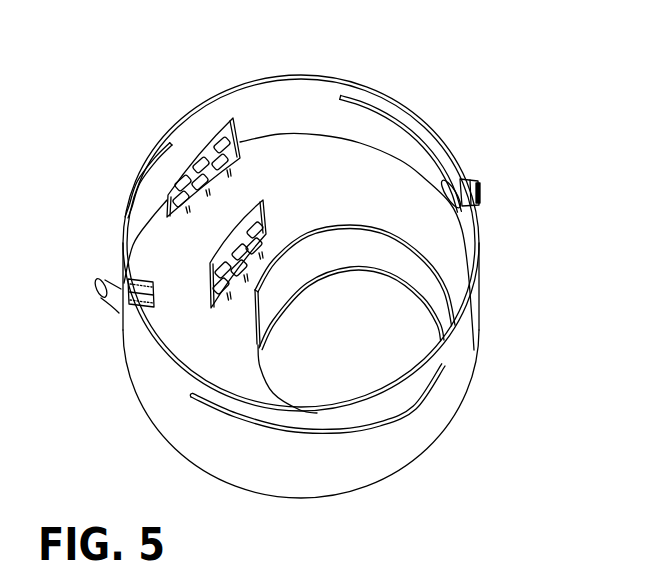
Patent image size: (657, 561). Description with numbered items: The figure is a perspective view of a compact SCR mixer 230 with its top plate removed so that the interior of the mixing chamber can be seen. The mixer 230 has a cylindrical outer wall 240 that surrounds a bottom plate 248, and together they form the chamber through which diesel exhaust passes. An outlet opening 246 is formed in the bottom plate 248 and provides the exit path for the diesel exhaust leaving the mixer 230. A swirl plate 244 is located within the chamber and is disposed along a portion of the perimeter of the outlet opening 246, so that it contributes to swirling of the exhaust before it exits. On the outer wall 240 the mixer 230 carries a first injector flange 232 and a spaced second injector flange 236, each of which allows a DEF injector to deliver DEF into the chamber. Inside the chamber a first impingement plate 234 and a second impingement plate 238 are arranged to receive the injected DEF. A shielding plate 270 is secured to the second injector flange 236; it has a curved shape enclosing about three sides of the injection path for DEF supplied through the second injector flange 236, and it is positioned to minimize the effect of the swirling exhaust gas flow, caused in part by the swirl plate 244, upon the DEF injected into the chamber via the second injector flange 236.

The compact SCR mixer 230 is at (140, 444).
The first injector flange 232 is at (478, 193).
The first impingement plate 234 is at (233, 123).
The second injector flange 236 is at (110, 302).
The second impingement plate 238 is at (215, 252).
The cylindrical outer wall 240 is at (457, 390).
The swirl plate 244 is at (433, 264).
The outlet opening 246 is at (330, 364).
The bottom plate 248 is at (338, 196).
The shielding plate 270 is at (133, 279).